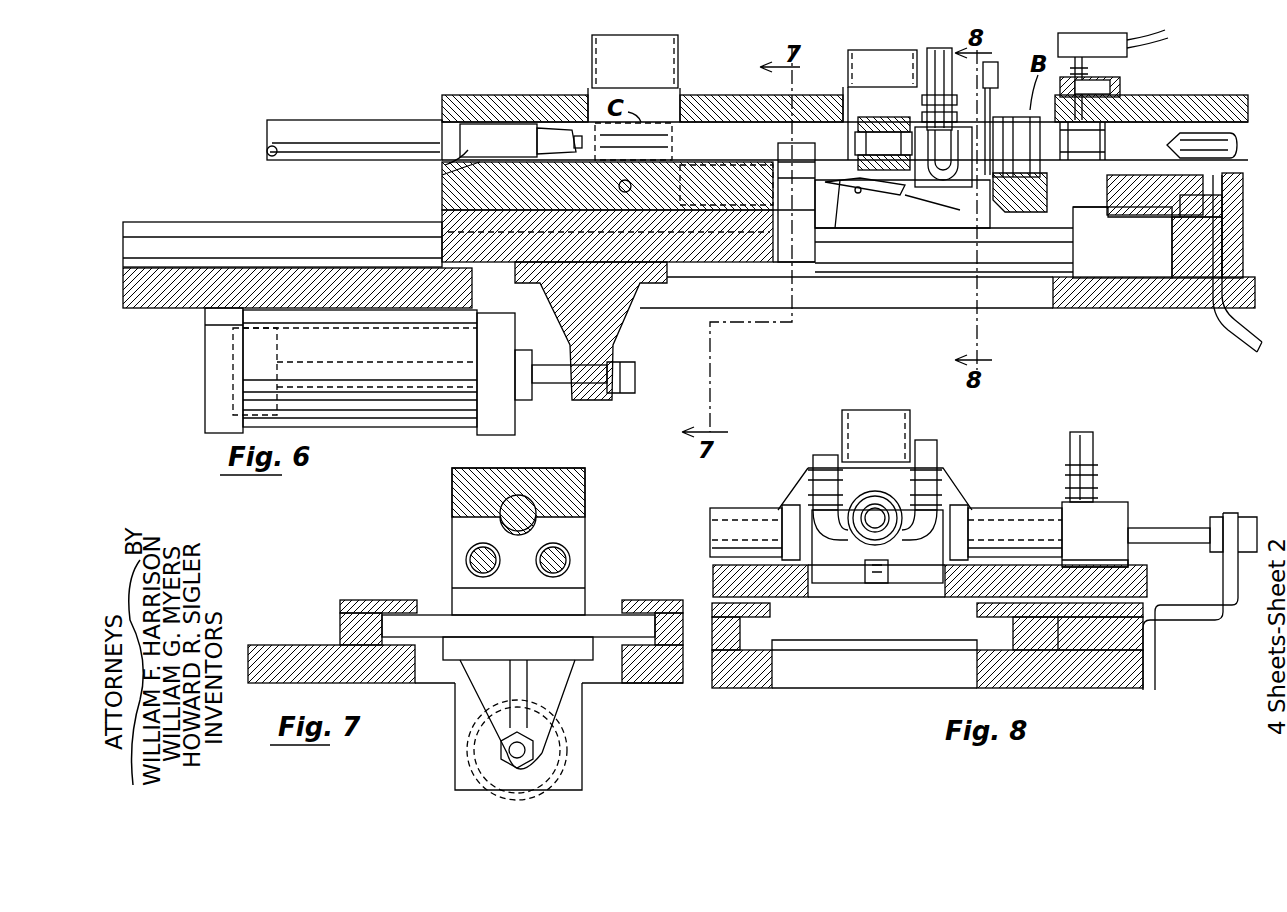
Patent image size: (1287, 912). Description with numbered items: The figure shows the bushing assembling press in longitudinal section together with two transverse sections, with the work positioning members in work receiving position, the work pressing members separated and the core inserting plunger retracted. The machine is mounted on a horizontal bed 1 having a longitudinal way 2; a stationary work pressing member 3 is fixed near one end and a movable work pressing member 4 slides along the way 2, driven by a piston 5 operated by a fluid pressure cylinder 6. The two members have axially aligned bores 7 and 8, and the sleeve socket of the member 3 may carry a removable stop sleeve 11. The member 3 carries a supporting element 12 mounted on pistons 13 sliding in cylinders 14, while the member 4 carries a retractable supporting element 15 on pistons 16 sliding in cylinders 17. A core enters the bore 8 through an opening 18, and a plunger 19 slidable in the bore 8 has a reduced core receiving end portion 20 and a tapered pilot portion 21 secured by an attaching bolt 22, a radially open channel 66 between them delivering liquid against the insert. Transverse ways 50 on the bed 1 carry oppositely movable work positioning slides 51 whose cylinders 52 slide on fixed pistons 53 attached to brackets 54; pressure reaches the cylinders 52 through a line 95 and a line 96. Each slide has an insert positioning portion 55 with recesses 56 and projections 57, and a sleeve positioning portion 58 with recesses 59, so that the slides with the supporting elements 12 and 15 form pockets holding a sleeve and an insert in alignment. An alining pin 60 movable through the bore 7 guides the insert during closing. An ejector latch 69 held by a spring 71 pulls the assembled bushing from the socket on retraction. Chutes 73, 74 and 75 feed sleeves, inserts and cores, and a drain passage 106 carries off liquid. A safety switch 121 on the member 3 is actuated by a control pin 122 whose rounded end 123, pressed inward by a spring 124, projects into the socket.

In FIG. 6, the horizontal bed 1 is at (166, 310).
In FIG. 7, the horizontal bed 1 is at (280, 645).
In FIG. 8, the horizontal bed 1 is at (740, 675).
In FIG. 6, the longitudinal way 2 is at (237, 222).
In FIG. 7, the longitudinal way 2 is at (345, 598).
In FIG. 8, the longitudinal way 2 is at (760, 622).
In FIG. 6, the work pressing member 3 is at (1212, 100).
In FIG. 6, the work pressing member 4 is at (472, 88).
In FIG. 7, the work pressing member 4 is at (452, 528).
In FIG. 8, the work pressing member 4 is at (885, 468).
In FIG. 6, the piston 5 is at (553, 383).
In FIG. 7, the piston 5 is at (510, 752).
In FIG. 6, the fluid pressure cylinder 6 is at (430, 428).
In FIG. 7, the fluid pressure cylinder 6 is at (570, 752).
In FIG. 6, the bore 7 is at (1245, 95).
In FIG. 6, the bore 8 is at (708, 160).
In FIG. 7, the bore 8 is at (533, 522).
In FIG. 6, the stop sleeve 11 is at (1160, 95).
In FIG. 6, the supporting element 12 is at (1092, 240).
In FIG. 6, the pistons 13 is at (1100, 217).
In FIG. 6, the cylinders 14 is at (1175, 235).
In FIG. 6, the supporting element 15 is at (870, 210).
In FIG. 8, the supporting element 15 is at (873, 585).
In FIG. 6, the pistons 16 is at (762, 165).
In FIG. 7, the pistons 16 is at (465, 558).
In FIG. 6, the cylinders 17 is at (612, 192).
In FIG. 6, the opening 18 is at (680, 95).
In FIG. 7, the opening 18 is at (540, 468).
In FIG. 6, the plunger 19 is at (338, 120).
In FIG. 6, the core receiving end portion 20 is at (445, 165).
In FIG. 6, the tapered pilot portion 21 is at (560, 110).
In FIG. 6, the attaching bolt 22 is at (576, 128).
In FIG. 6, the transverse ways 50 is at (826, 228).
In FIG. 8, the transverse ways 50 is at (790, 605).
In FIG. 6, the work positioning slides 51 is at (925, 228).
In FIG. 8, the work positioning slides 51 is at (1100, 557).
In FIG. 8, the cylinders 52 is at (722, 505).
In FIG. 8, the fixed pistons 53 is at (1193, 525).
In FIG. 8, the brackets 54 is at (1237, 590).
In FIG. 6, the insert positioning portion 55 is at (855, 78).
In FIG. 8, the insert positioning portion 55 is at (805, 470).
In FIG. 6, the recesses 56 is at (880, 112).
In FIG. 8, the recesses 56 is at (853, 452).
In FIG. 6, the projections 57 is at (920, 187).
In FIG. 8, the projections 57 is at (858, 548).
In FIG. 6, the sleeve positioning portions 58 is at (1012, 112).
In FIG. 6, the recesses 59 is at (990, 108).
In FIG. 6, the alining pin 60 is at (1220, 133).
In FIG. 6, the channel 66 is at (548, 160).
In FIG. 6, the ejector latch 69 is at (862, 190).
In FIG. 8, the ejector latch 69 is at (878, 583).
In FIG. 6, the spring 71 is at (823, 215).
In FIG. 6, the chute 73 is at (1000, 65).
In FIG. 6, the chute 74 is at (848, 62).
In FIG. 6, the chute 75 is at (592, 52).
In FIG. 8, the line 95 is at (1095, 445).
In FIG. 6, the line 96 is at (935, 50).
In FIG. 8, the line 96 is at (937, 448).
In FIG. 6, the drain passage 106 is at (1230, 345).
In FIG. 6, the safety switch 121 is at (1141, 42).
In FIG. 6, the control pin 122 is at (1120, 97).
In FIG. 6, the rounded end 123 is at (1080, 132).
In FIG. 6, the spring 124 is at (1118, 82).